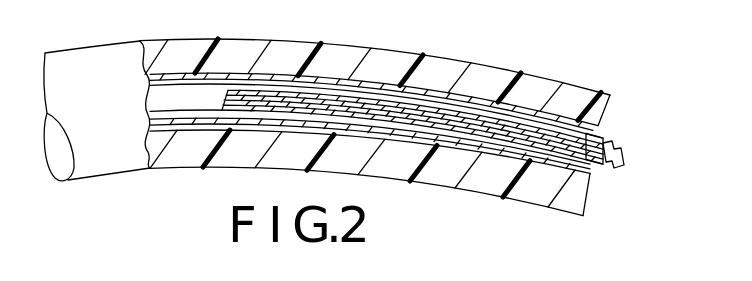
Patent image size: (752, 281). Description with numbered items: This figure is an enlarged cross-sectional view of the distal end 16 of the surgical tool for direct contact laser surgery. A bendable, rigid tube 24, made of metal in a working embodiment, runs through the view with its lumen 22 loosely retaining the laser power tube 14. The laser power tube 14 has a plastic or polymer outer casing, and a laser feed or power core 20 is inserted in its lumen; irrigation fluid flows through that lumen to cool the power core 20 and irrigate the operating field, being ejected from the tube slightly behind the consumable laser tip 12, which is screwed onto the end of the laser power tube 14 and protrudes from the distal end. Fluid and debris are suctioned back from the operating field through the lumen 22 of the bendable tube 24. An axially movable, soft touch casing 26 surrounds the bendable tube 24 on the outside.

The laser tip 12 is at (624, 159).
The laser power tube 14 is at (603, 140).
The distal end 16 is at (353, 111).
The laser power core 20 is at (408, 105).
The lumen 22 is at (515, 118).
The bendable rigid tube 24 is at (476, 90).
The soft touch casing 26 is at (374, 31).